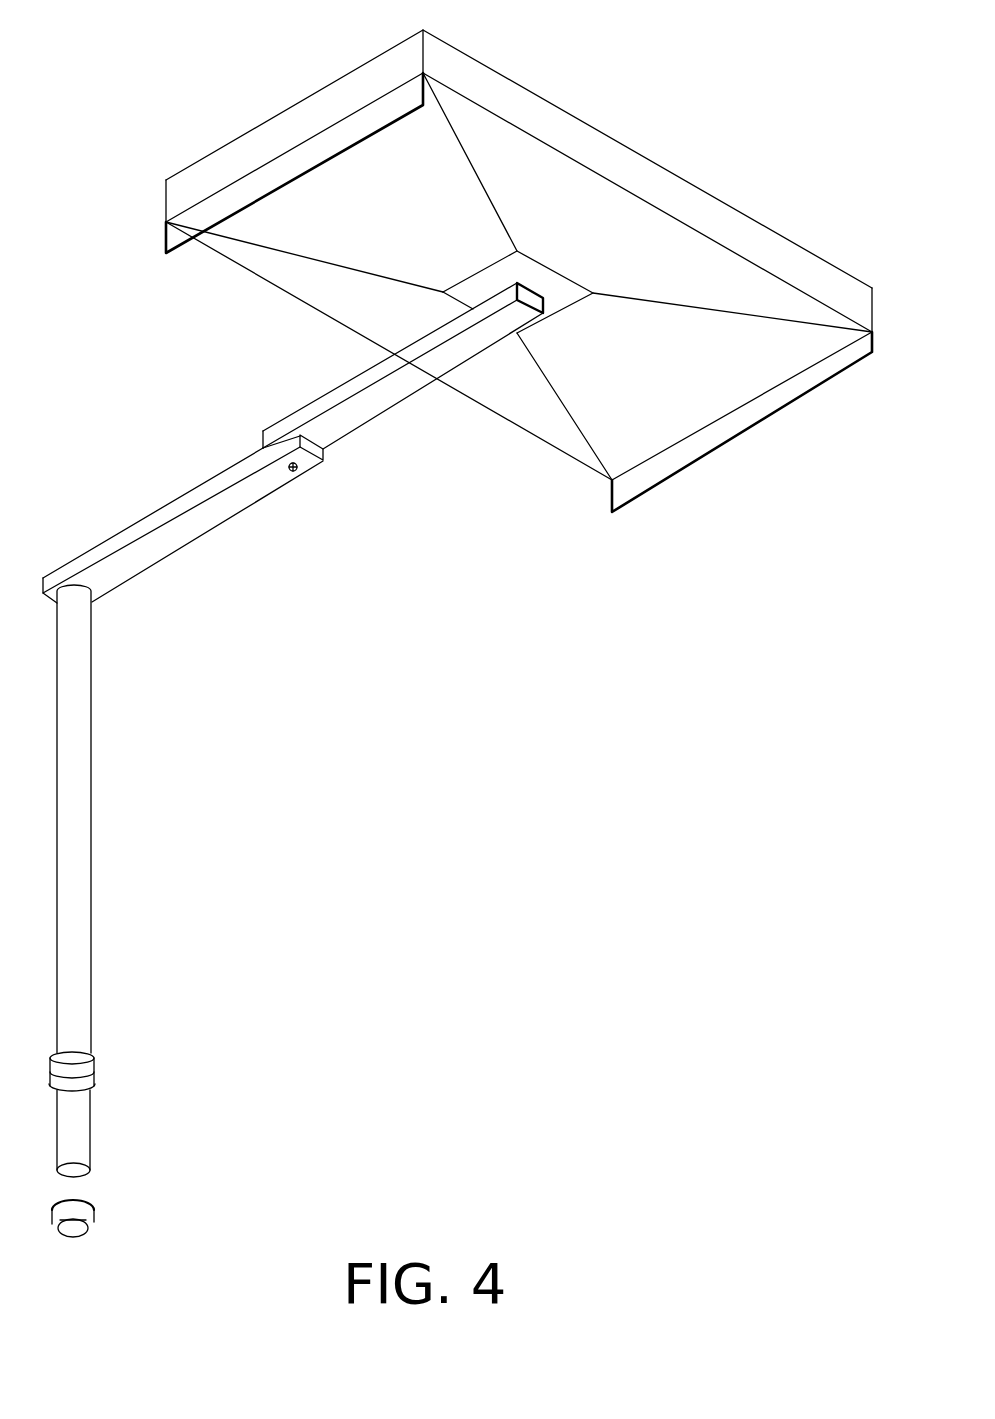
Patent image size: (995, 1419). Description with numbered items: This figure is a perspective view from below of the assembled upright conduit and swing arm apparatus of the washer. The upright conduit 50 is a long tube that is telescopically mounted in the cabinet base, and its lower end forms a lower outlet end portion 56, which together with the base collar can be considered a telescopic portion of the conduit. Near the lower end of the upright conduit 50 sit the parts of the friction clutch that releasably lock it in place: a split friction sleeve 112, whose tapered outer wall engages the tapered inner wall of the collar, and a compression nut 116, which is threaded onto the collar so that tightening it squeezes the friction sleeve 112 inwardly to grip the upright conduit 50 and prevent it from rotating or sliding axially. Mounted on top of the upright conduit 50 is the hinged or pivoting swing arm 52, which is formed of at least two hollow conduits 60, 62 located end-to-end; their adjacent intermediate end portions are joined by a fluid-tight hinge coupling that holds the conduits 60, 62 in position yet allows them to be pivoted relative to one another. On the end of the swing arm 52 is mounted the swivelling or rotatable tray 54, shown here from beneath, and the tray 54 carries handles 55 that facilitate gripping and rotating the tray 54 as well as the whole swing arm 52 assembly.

The upright conduit 50 is at (78, 792).
The swing arm 52 is at (293, 444).
The tray 54 is at (565, 435).
The handles 55 is at (171, 257).
The lower outlet end portion 56 is at (88, 1130).
The hollow conduit 60 is at (153, 545).
The hollow conduit 62 is at (362, 408).
The split friction sleeve 112 is at (94, 1220).
The compression nut 116 is at (90, 1068).